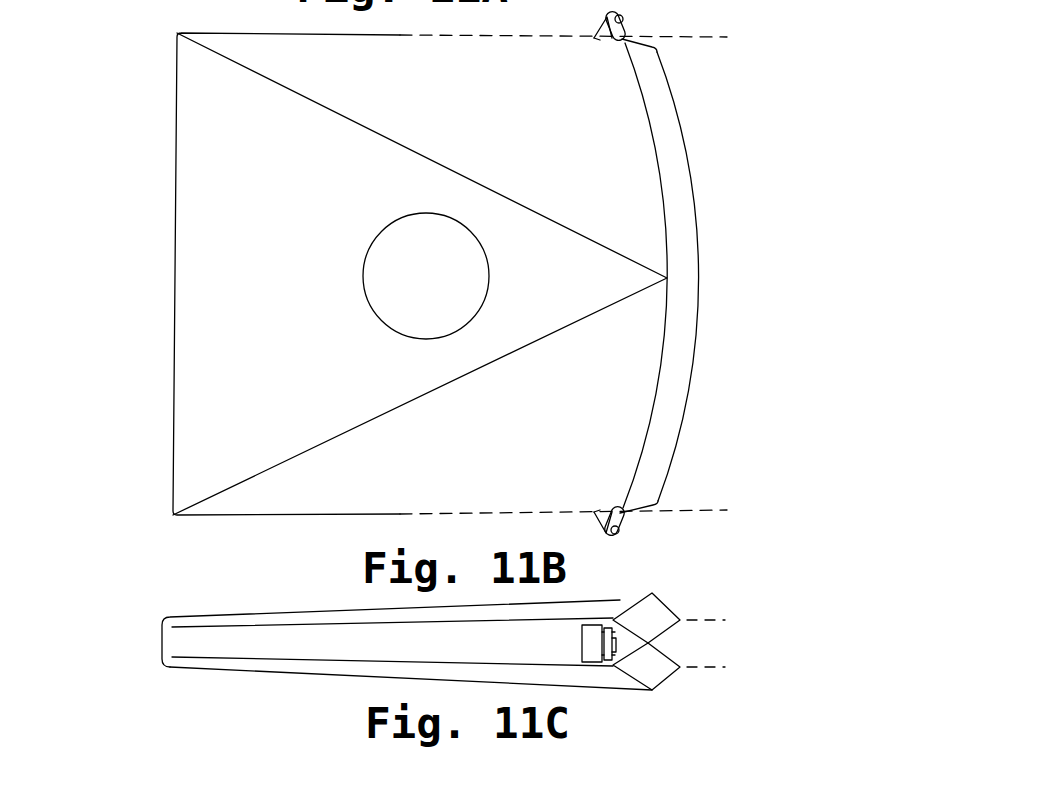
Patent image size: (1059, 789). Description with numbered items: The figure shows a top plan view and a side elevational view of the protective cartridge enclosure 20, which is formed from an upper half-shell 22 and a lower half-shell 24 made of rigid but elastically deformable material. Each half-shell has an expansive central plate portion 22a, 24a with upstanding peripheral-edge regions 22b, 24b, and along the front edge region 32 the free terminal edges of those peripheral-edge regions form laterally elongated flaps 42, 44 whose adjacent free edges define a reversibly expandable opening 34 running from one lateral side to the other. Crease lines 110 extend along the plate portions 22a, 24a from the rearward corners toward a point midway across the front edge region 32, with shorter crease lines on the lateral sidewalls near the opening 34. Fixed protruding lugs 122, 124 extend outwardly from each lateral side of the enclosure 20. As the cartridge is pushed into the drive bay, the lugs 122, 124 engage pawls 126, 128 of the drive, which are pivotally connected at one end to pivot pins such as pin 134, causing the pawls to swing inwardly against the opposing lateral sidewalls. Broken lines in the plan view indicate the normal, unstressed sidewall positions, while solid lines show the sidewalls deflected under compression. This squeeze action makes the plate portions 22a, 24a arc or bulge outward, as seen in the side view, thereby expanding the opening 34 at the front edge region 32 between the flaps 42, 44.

In FIG. 11B, the enclosure 20 is at (122, 30).
In FIG. 11C, the enclosure 20 is at (115, 590).
In FIG. 11B, the upper half-shell 22 is at (200, 146).
In FIG. 11C, the upper half-shell 22 is at (275, 610).
In FIG. 11B, the central plate portion of upper half-shell 22a is at (271, 292).
In FIG. 11C, the central plate portion of upper half-shell 22a is at (348, 608).
In FIG. 11C, the peripheral-edge region of upper half-shell 22b is at (173, 627).
In FIG. 11C, the lower half-shell 24 is at (275, 672).
In FIG. 11C, the central plate portion of lower half-shell 24a is at (348, 672).
In FIG. 11C, the peripheral-edge region of lower half-shell 24b is at (173, 657).
In FIG. 11B, the front edge region 32 is at (695, 276).
In FIG. 11C, the front edge region 32 is at (709, 646).
In FIG. 11B, the reversibly expandable opening 34 is at (700, 280).
In FIG. 11C, the reversibly expandable opening 34 is at (728, 648).
In FIG. 11B, the upper flap 42 is at (678, 153).
In FIG. 11C, the upper flap 42 is at (668, 605).
In FIG. 11C, the lower flap 44 is at (663, 680).
In FIG. 11B, the crease lines 110 is at (252, 75).
In FIG. 11B, the protruding lug 122 is at (598, 11).
In FIG. 11B, the protruding lug 124 is at (612, 541).
In FIG. 11C, the protruding lug 124 is at (590, 630).
In FIG. 11B, the pawl 126 is at (640, 38).
In FIG. 11B, the pawl 128 is at (622, 514).
In FIG. 11C, the pawl 128 is at (623, 645).
In FIG. 11B, the pivot pin 134 is at (625, 20).
In FIG. 11C, the pivot pin 134 is at (610, 627).